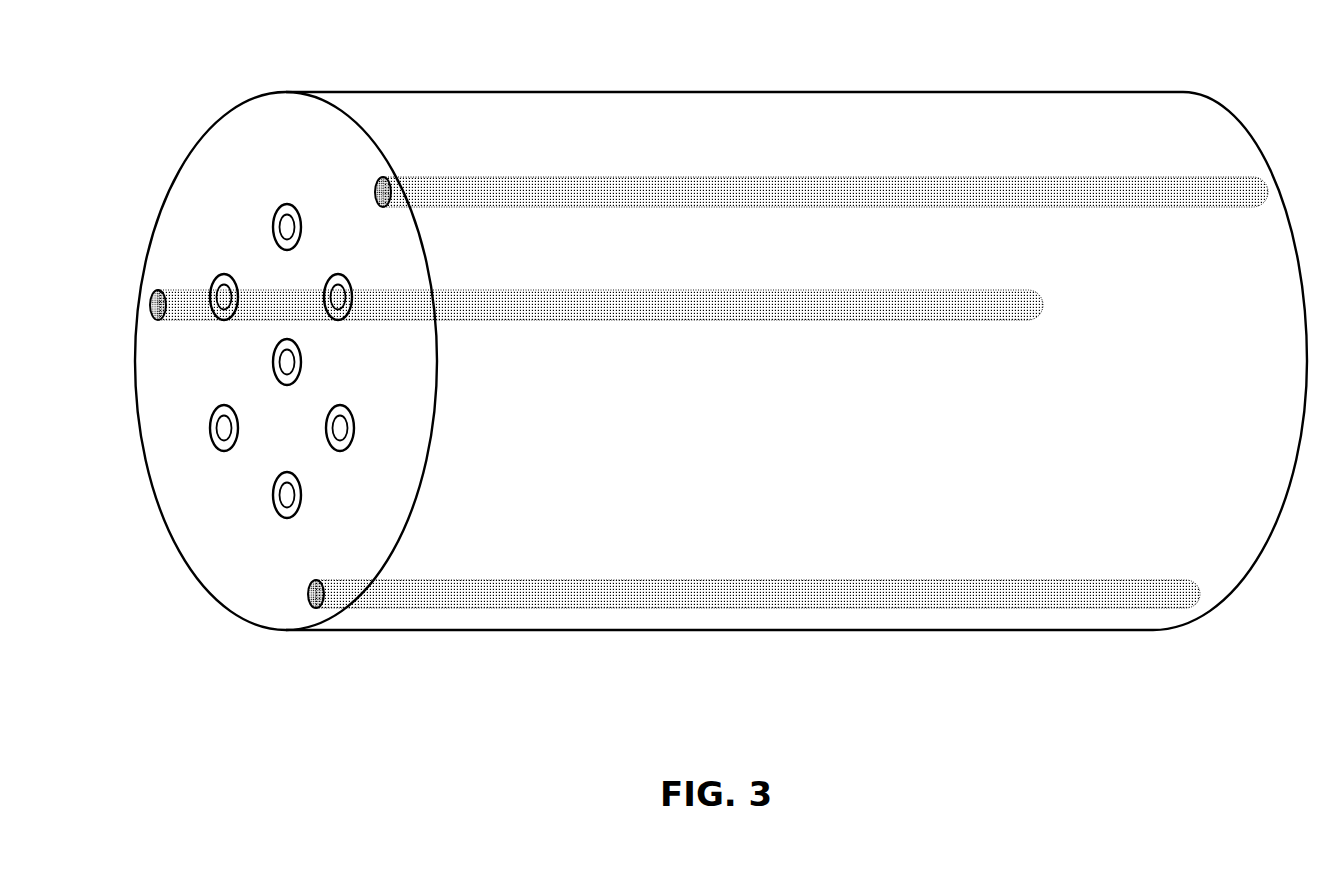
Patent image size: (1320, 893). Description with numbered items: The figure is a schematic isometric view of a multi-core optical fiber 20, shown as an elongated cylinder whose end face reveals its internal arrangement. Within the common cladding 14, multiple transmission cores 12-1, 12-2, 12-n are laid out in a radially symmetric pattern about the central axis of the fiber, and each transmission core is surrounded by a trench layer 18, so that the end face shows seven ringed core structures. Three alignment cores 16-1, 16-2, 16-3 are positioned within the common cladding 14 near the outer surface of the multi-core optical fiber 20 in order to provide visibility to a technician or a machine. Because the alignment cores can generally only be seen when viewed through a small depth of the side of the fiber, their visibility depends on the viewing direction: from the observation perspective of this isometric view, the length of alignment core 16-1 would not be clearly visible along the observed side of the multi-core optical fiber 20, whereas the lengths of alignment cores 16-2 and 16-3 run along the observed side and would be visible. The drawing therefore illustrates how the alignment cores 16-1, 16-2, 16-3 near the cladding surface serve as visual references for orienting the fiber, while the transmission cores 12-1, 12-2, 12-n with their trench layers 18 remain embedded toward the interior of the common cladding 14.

The multi-core optical fiber 20 is at (294, 48).
The common cladding 14 is at (620, 128).
The alignment core 16-1 is at (182, 290).
The alignment core 16-2 is at (1070, 190).
The alignment core 16-3 is at (937, 595).
The transmission core 12-1 is at (221, 434).
The transmission core 12-2 is at (283, 500).
The transmission core 12-n is at (343, 440).
The trench layer 18 is at (285, 502).